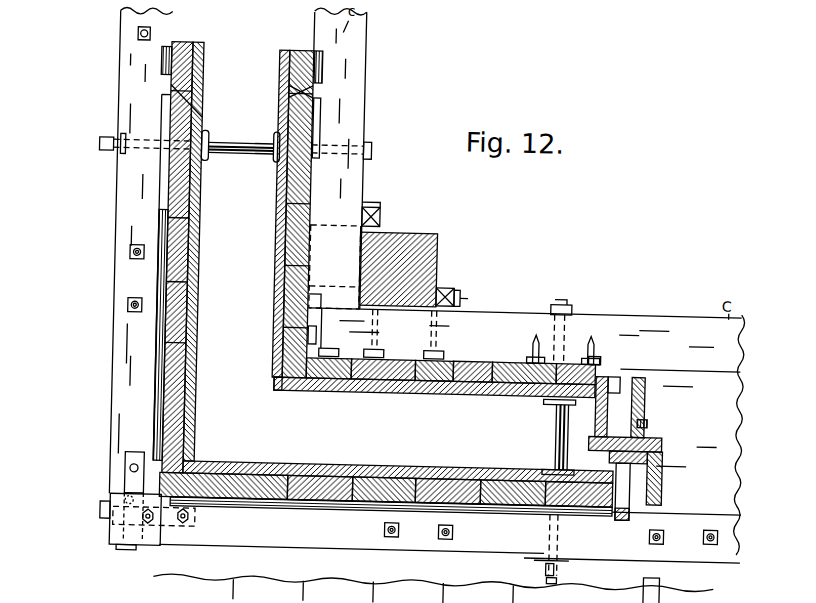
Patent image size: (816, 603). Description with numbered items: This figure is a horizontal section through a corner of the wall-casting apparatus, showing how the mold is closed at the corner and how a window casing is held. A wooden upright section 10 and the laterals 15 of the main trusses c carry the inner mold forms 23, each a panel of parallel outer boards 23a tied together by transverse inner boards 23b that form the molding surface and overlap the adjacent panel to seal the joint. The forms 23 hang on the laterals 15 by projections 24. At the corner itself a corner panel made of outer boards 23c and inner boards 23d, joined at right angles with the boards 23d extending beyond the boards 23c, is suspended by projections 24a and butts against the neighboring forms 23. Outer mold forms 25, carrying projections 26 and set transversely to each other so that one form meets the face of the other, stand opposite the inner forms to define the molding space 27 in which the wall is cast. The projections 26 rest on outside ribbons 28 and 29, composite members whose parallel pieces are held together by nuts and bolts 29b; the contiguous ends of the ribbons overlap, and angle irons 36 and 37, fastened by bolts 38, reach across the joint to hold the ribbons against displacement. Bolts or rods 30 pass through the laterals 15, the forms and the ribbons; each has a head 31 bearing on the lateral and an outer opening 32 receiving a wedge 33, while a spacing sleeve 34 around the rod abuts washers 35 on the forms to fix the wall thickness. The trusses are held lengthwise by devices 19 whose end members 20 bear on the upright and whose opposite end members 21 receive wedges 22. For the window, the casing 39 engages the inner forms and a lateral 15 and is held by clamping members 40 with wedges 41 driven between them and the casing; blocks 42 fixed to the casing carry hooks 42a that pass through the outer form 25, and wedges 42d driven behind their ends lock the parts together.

The relatively longer section 10 is at (432, 244).
The lateral 15 is at (357, 121).
The device 19 is at (355, 268).
The end member 20 is at (353, 301).
The opposite end member 21 is at (377, 209).
The wedge 22 is at (378, 218).
The inner mold form 23 is at (198, 77).
The outer board 23a is at (167, 366).
The inner board 23b is at (167, 84).
The outer board of corner panel 23c is at (276, 360).
The inner board of corner panel 23d is at (295, 397).
The projection 24 is at (316, 70).
The projection 24a is at (309, 335).
The outer mold form 25 is at (157, 125).
The projection 26 is at (156, 69).
The molding space 27 is at (215, 197).
The ribbon 28 is at (287, 544).
The ribbon 29 is at (117, 414).
The nut and bolt 29b is at (124, 258).
The bolt or rod 30 is at (96, 150).
The head 31 is at (366, 151).
The opening 32 is at (550, 558).
The wedge 33 is at (571, 562).
The spacing sleeve 34 is at (228, 144).
The washer 35 is at (274, 168).
The angle iron 36 is at (112, 532).
The angle iron 37 is at (141, 557).
The bolt 38 is at (132, 473).
The casing 39 is at (654, 412).
The clamping member 40 is at (616, 370).
The wedge 41 is at (627, 373).
The block 42 is at (616, 458).
The hook or angle iron 42a is at (630, 517).
The wedge 42d is at (659, 511).